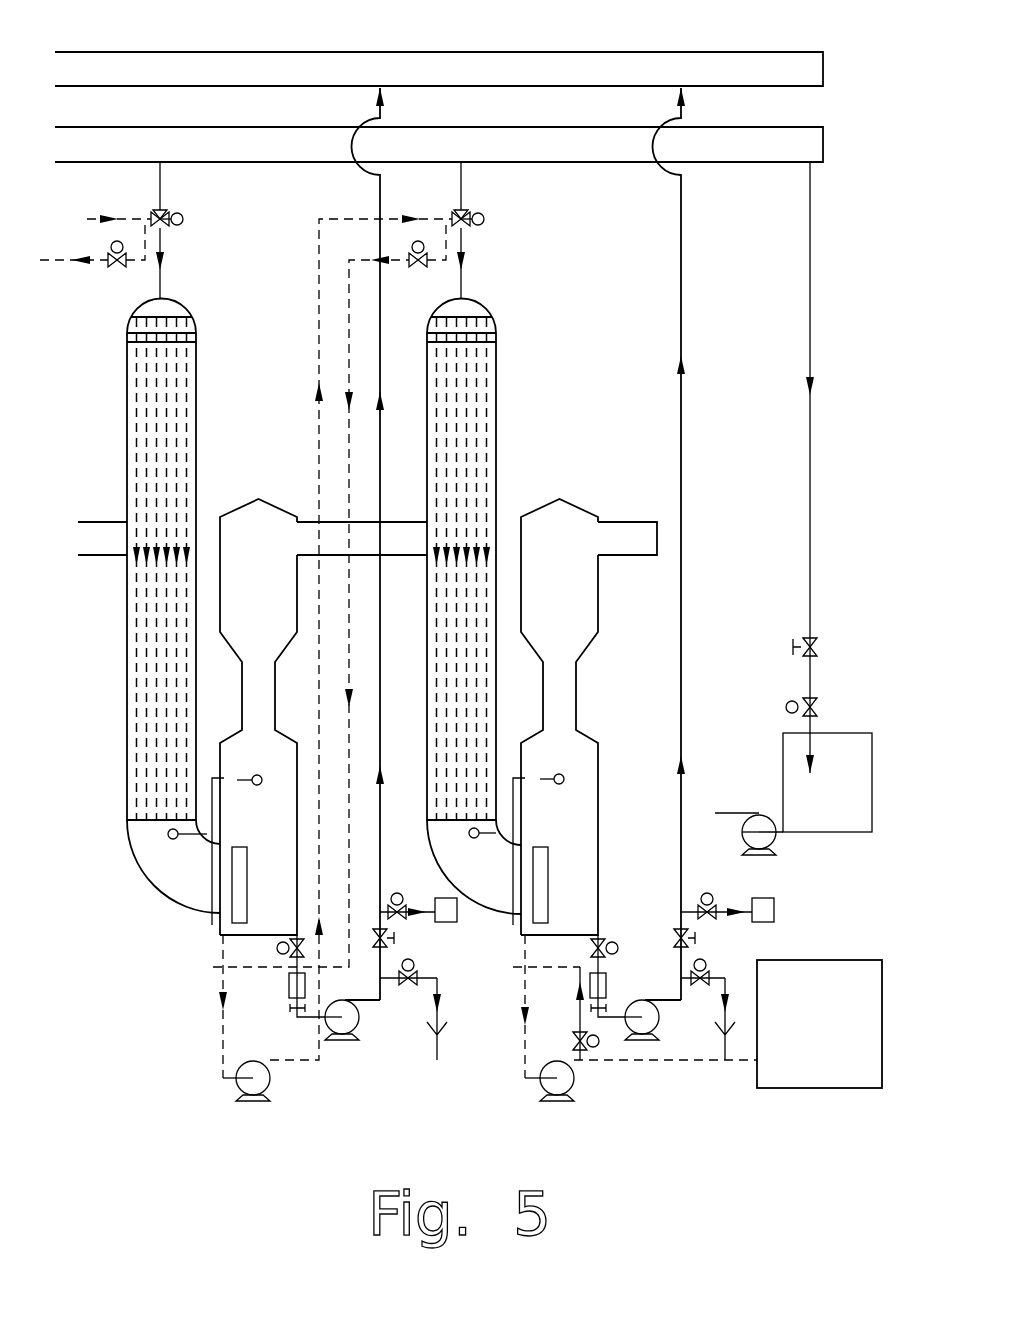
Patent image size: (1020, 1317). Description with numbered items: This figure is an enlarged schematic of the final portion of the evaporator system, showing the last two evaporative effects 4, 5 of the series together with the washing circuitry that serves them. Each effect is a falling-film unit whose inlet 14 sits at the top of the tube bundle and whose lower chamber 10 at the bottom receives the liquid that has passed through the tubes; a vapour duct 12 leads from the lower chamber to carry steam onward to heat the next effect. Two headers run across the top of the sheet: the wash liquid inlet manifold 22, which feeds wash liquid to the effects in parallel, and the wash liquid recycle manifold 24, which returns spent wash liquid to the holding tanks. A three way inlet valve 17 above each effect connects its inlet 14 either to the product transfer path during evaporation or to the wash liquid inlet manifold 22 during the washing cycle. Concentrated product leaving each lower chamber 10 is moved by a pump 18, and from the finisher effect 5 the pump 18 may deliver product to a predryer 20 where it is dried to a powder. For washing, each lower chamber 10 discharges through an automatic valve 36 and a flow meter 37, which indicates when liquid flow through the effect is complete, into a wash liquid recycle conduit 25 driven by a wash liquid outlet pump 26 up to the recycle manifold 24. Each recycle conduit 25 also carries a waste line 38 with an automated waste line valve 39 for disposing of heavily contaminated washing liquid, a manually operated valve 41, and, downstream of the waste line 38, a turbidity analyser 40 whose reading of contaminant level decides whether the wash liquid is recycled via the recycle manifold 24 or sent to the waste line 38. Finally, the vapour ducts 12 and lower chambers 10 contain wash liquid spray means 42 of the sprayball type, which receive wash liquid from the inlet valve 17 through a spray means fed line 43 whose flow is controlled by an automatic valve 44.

The evaporative effect 4 is at (127, 655).
The evaporative effect 5 is at (427, 640).
The lower chamber 10 is at (158, 900).
The vapour duct 12 is at (250, 767).
The inlet 14 is at (163, 300).
The inlet valve 17 is at (168, 212).
The pump 18 is at (268, 1087).
The predryer 20 is at (807, 1030).
The wash liquid inlet manifold 22 is at (296, 162).
The wash liquid recycle manifold 24 is at (276, 52).
The wash liquid recycle conduit 25 is at (383, 842).
The wash liquid outlet pump 26 is at (355, 1030).
The automatic valve 36 is at (290, 948).
The flow meter 37 is at (289, 985).
The waste line 38 is at (440, 990).
The waste line valve 39 is at (414, 968).
The turbidity analyser 40 is at (458, 915).
The manually operated valve 41 is at (387, 940).
The wash liquid spray means 42 is at (257, 785).
The spray means fed line 43 is at (213, 967).
The automatic valve 44 is at (122, 267).